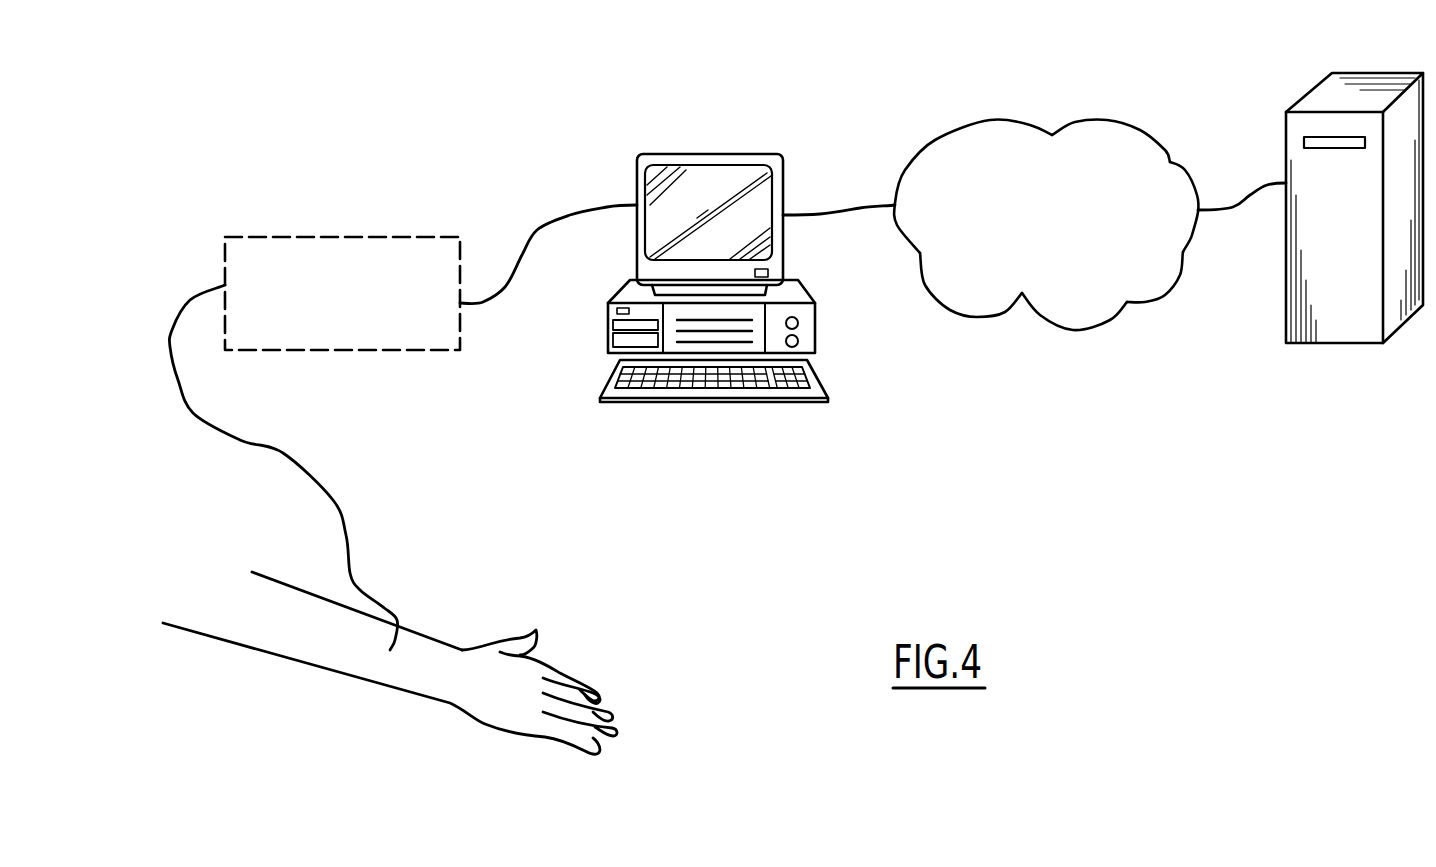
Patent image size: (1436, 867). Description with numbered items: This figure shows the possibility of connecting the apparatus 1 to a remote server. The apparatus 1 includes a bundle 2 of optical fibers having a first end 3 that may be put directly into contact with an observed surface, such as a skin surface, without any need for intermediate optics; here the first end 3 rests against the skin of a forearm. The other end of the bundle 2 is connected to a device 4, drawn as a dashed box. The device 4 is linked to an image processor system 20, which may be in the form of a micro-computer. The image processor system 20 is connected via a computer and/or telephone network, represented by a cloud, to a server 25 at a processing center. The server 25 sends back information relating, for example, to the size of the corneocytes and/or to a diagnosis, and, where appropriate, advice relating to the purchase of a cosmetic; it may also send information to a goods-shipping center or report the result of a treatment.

The apparatus 1 is at (714, 211).
The bundle of optical fibers 2 is at (337, 502).
The first end 3 is at (387, 635).
The device 4 is at (368, 237).
The image processor system 20 is at (647, 155).
The server 25 is at (1317, 97).